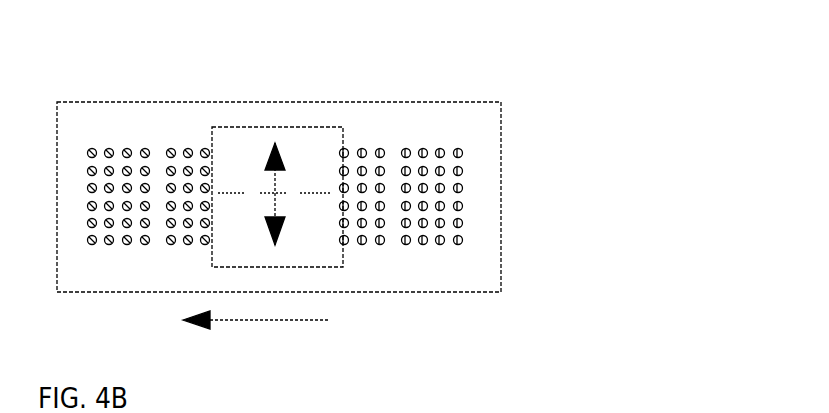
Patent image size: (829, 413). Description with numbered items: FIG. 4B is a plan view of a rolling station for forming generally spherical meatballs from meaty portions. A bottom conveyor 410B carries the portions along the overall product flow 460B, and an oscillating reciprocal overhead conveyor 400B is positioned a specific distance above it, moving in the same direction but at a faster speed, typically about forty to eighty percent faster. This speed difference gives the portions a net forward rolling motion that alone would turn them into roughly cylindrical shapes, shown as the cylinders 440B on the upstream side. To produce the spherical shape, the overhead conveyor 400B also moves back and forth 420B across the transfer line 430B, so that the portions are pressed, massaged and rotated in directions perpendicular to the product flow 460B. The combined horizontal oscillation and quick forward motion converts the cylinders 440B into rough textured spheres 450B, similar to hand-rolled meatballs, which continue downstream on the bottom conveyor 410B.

The oscillating reciprocal overhead conveyor 400B is at (312, 127).
The bottom conveyor 410B is at (413, 102).
The back and forth motion of the overhead conveyor 420B is at (272, 141).
The transfer line 430B is at (232, 192).
The cylinders 440B is at (441, 245).
The rough textured spheres 450B is at (107, 149).
The overall product flow 460B is at (255, 326).